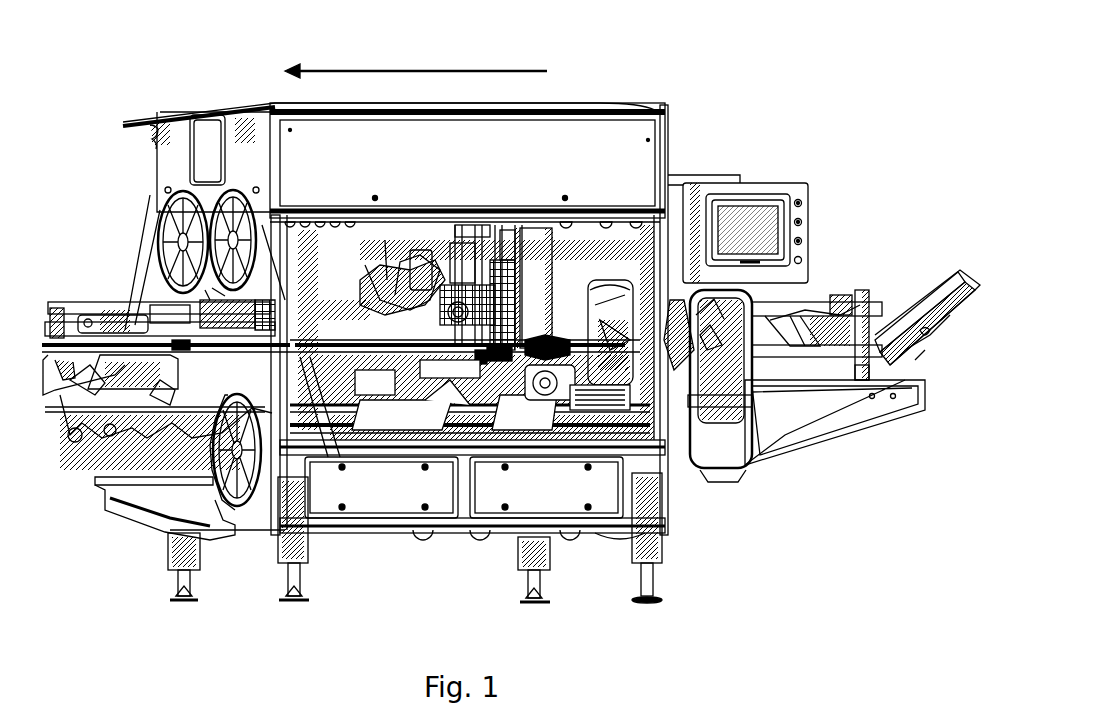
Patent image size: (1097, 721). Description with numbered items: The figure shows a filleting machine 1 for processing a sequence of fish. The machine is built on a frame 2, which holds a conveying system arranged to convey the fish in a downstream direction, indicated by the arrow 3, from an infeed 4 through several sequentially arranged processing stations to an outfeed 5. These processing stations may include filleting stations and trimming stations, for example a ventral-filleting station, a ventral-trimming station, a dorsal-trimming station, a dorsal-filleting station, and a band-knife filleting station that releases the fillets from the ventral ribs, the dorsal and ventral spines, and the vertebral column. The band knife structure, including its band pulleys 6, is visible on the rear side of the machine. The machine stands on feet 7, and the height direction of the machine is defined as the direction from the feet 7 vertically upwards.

The filleting machine 1 is at (722, 70).
The frame 2 is at (398, 531).
The arrow 3 is at (416, 60).
The infeed 4 is at (872, 300).
The outfeed 5 is at (53, 297).
The band pulleys 6 is at (162, 218).
The feet 7 is at (540, 606).